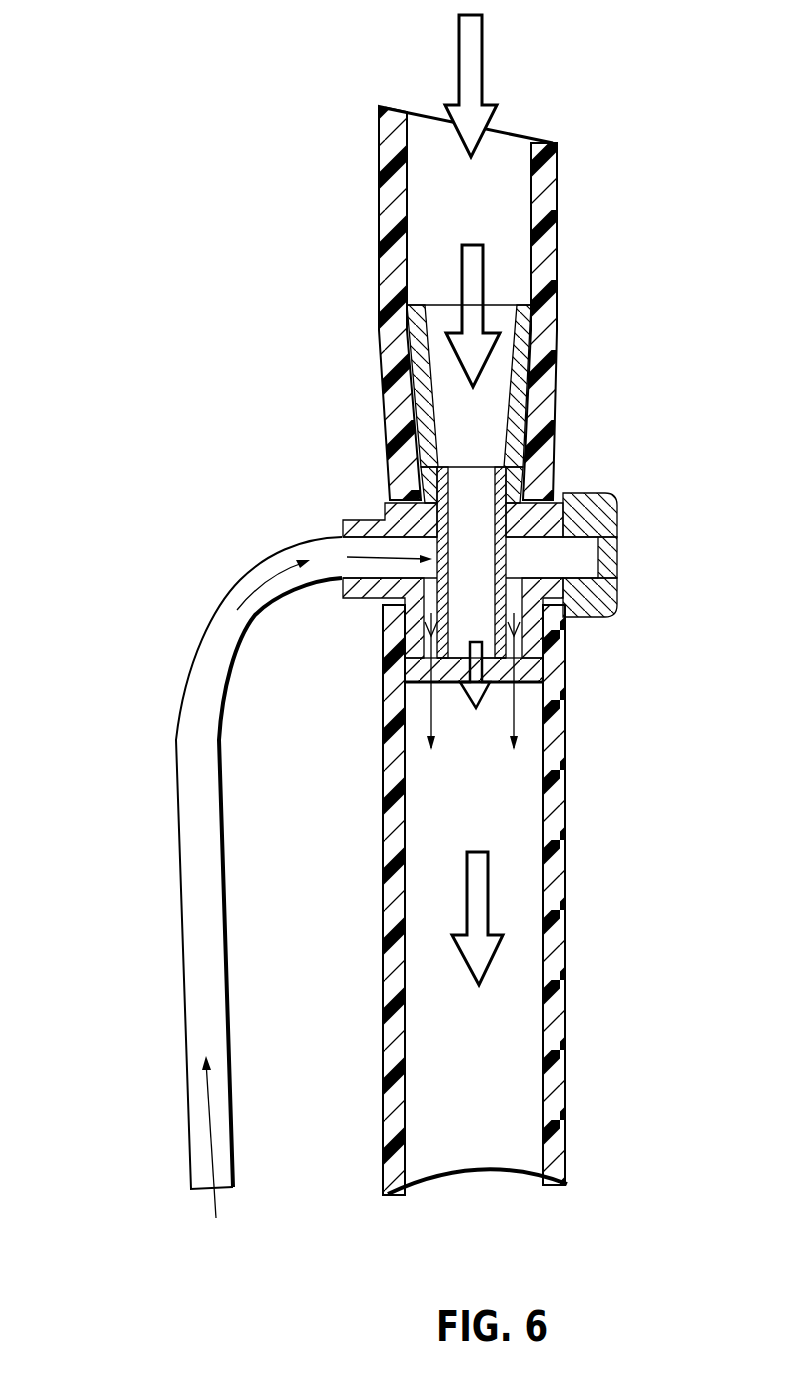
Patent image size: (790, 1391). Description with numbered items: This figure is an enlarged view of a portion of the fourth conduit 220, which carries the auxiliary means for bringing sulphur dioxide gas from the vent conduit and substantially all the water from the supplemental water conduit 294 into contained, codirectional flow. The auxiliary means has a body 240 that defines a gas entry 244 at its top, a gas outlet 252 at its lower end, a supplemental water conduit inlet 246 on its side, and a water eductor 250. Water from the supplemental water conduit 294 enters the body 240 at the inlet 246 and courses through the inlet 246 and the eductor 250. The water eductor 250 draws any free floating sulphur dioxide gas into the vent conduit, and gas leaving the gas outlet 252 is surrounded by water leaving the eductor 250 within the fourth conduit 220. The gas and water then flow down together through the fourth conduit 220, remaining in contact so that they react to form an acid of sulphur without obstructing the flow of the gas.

The fourth conduit 220 is at (557, 950).
The auxiliary means body 240 is at (513, 473).
The gas entry 244 is at (499, 320).
The supplemental water conduit inlet 246 is at (380, 520).
The water eductor 250 is at (428, 652).
The gas outlet 252 is at (458, 650).
The supplemental water conduit 294 is at (188, 757).